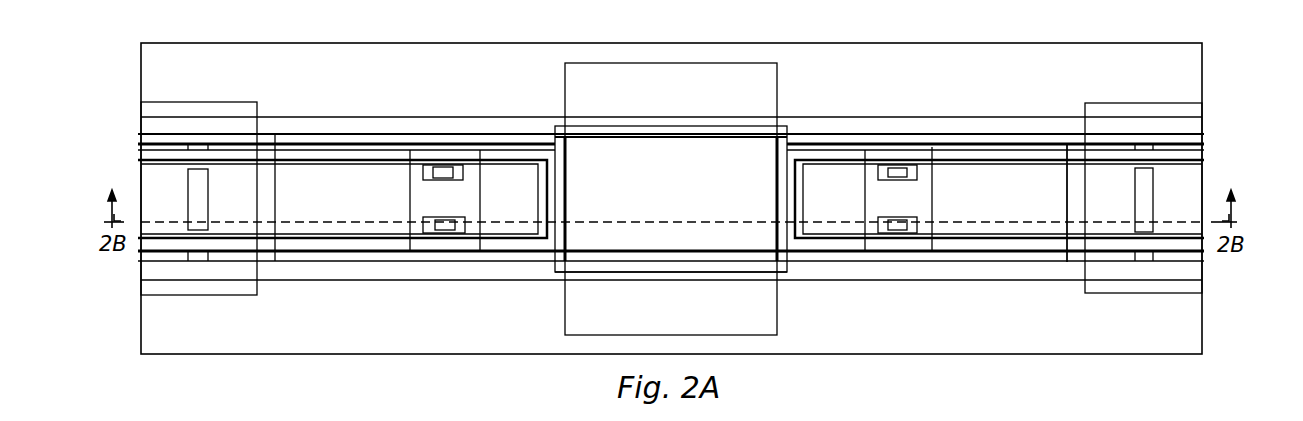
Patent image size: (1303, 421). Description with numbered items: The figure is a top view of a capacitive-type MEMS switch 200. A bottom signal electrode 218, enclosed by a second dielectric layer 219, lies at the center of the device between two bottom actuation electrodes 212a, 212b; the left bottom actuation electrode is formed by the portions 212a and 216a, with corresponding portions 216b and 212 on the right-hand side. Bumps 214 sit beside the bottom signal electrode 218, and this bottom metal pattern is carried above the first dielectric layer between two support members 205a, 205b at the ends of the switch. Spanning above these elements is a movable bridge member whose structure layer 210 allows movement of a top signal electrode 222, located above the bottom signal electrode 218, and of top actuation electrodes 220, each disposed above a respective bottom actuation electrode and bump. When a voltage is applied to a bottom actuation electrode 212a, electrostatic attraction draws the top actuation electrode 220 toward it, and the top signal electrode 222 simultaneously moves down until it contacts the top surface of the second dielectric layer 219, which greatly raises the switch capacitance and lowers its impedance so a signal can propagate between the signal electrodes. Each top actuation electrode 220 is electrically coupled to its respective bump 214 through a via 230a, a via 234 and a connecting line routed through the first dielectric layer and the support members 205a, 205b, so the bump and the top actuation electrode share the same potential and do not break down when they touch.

The MEMS switch 200 is at (1224, 77).
The support member 205a is at (198, 102).
The support member 205b is at (1145, 103).
The structure layer 210 is at (912, 118).
The bottom actuation electrode 212 is at (1067, 208).
The bottom actuation electrode 212a is at (323, 207).
The bottom actuation electrode 212b is at (1043, 175).
The bump 214 is at (420, 172).
The bottom actuation electrode 216a is at (507, 173).
The bottom actuation electrode 216b is at (835, 175).
The bottom signal electrode 218 is at (565, 304).
The second dielectric layer 219 is at (671, 272).
The top actuation electrode 220 is at (979, 157).
The top signal electrode 222 is at (700, 133).
The via 230a is at (197, 211).
The via 234 is at (918, 170).